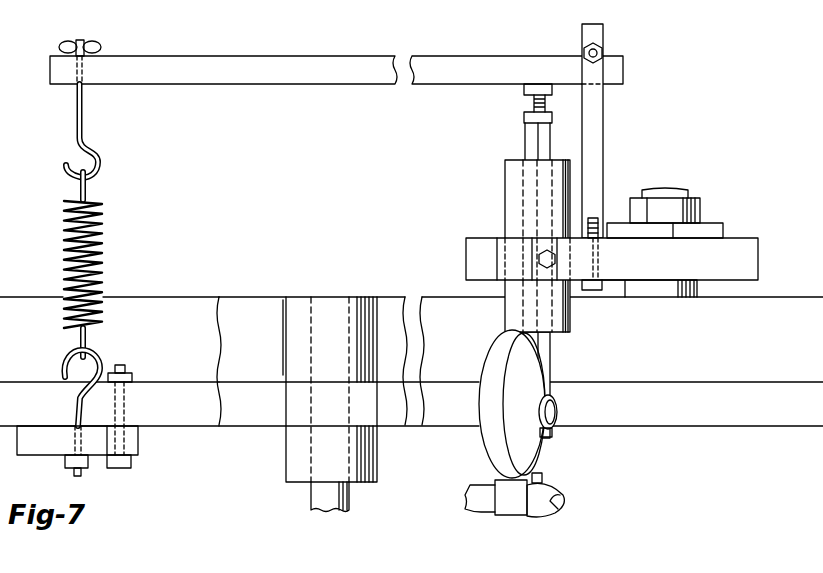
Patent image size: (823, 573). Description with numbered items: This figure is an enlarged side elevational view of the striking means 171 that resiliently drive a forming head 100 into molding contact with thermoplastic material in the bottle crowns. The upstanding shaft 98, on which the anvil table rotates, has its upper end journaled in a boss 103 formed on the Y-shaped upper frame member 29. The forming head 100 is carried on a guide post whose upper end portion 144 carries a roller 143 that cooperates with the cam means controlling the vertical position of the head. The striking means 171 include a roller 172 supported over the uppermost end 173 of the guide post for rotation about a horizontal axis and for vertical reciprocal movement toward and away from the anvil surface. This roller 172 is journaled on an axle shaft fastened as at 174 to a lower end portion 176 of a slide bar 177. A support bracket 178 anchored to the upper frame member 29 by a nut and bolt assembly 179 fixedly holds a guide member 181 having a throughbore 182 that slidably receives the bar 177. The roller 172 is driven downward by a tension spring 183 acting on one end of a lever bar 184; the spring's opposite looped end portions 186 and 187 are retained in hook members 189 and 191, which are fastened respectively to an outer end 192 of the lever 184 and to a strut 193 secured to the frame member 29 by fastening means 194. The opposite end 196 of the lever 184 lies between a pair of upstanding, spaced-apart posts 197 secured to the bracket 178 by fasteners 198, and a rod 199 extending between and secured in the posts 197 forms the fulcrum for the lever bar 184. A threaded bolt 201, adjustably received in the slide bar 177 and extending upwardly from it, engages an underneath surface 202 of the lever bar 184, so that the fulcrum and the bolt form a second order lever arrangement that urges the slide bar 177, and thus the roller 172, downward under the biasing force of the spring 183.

The Y-shaped member 29 is at (193, 412).
The upstanding shaft 98 is at (312, 490).
The forming head 100 is at (548, 519).
The boss 103 is at (286, 446).
The roller 143 is at (536, 506).
The upper end portion 144 is at (507, 500).
The striking means 171 is at (450, 280).
The roller 172 is at (490, 436).
The uppermost end 173 is at (542, 476).
The fastening 174 is at (560, 416).
The lower end portion 176 is at (552, 435).
The slide bar 177 is at (526, 128).
The support bracket 178 is at (696, 248).
The nut and bolt assembly 179 is at (690, 206).
The guide member 181 is at (515, 212).
The throughbore 182 is at (524, 182).
The tension spring 183 is at (64, 248).
The lever bar 184 is at (272, 64).
The looped end portion 186 is at (88, 192).
The looped end portion 187 is at (86, 347).
The hook member 189 is at (84, 108).
The hook member 191 is at (75, 416).
The outer end 192 is at (66, 70).
The strut 193 is at (33, 446).
The fastening means 194 is at (118, 468).
The end 196 is at (613, 86).
The upstanding posts 197 is at (604, 123).
The fasteners 198 is at (592, 290).
The rod 199 is at (601, 52).
The bolt 201 is at (522, 90).
The underneath surface 202 is at (430, 88).